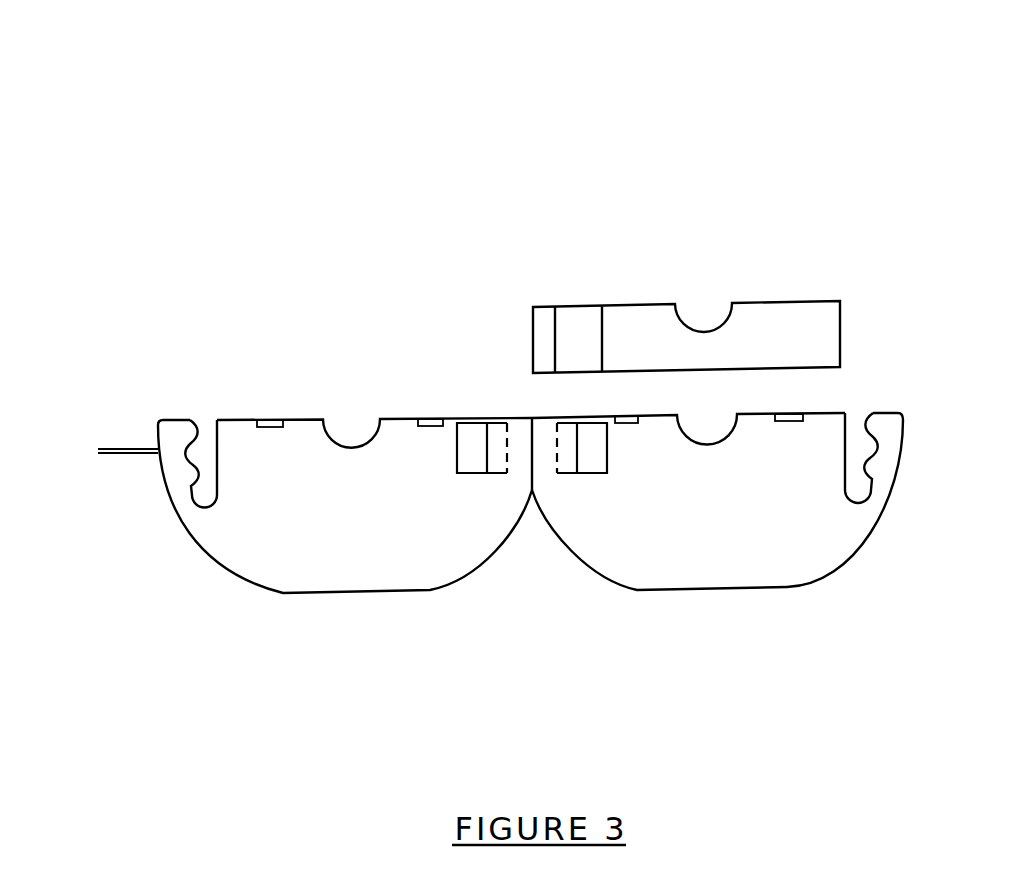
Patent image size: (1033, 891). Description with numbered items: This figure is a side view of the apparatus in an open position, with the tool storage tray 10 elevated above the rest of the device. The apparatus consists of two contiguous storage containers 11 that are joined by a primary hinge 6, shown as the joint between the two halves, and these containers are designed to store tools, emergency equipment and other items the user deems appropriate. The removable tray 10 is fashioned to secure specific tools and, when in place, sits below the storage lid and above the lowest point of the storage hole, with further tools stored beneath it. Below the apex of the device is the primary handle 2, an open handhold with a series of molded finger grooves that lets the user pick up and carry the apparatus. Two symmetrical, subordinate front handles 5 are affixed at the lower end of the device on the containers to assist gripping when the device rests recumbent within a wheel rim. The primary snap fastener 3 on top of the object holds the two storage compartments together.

The primary handle 2 is at (205, 437).
The primary snap fastener 3 is at (97, 443).
The subordinate front handles 5 is at (553, 478).
The primary hinge 6 is at (530, 417).
The tool tray 10 is at (776, 299).
The storage containers 11 is at (667, 592).